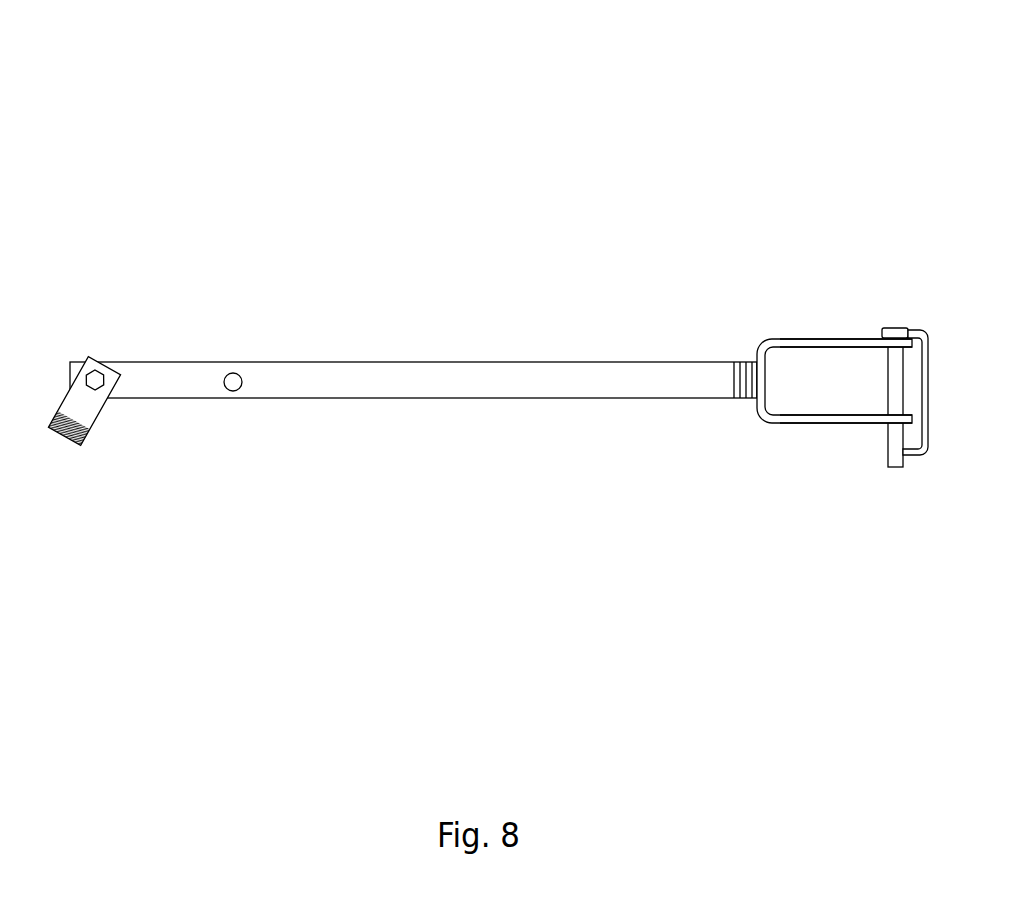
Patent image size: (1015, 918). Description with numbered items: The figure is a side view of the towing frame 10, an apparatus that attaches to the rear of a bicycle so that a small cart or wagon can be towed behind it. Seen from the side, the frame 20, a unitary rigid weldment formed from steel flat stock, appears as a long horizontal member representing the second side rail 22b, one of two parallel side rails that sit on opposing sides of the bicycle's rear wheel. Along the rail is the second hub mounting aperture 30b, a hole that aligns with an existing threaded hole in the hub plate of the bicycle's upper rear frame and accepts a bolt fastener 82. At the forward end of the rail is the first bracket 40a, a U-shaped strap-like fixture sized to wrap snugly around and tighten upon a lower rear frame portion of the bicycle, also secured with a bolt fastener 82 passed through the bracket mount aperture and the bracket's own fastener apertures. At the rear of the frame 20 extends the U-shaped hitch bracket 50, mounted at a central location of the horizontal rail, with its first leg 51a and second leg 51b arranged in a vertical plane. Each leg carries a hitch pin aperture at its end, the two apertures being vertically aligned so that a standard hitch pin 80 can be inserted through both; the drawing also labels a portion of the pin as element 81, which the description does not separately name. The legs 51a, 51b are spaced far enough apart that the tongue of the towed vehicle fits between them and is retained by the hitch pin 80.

The towing frame 10 is at (232, 180).
The frame 20 is at (585, 356).
The second side rail 22b is at (515, 382).
The second hub mounting aperture 30b is at (238, 388).
The first bracket 40a is at (80, 415).
The hitch bracket 50 is at (830, 418).
The first leg portion 51a is at (825, 338).
The second leg portion 51b is at (775, 425).
The hitch pin 80 is at (897, 373).
The pin head 81 is at (933, 338).
The bolt fastener 82 is at (98, 378).